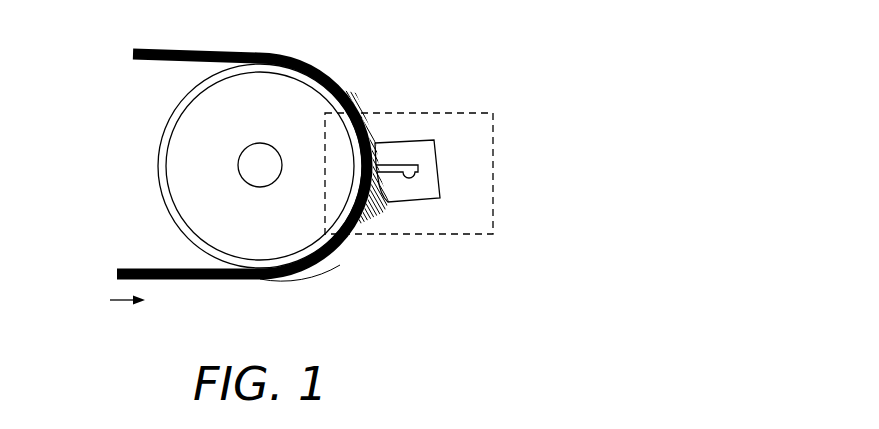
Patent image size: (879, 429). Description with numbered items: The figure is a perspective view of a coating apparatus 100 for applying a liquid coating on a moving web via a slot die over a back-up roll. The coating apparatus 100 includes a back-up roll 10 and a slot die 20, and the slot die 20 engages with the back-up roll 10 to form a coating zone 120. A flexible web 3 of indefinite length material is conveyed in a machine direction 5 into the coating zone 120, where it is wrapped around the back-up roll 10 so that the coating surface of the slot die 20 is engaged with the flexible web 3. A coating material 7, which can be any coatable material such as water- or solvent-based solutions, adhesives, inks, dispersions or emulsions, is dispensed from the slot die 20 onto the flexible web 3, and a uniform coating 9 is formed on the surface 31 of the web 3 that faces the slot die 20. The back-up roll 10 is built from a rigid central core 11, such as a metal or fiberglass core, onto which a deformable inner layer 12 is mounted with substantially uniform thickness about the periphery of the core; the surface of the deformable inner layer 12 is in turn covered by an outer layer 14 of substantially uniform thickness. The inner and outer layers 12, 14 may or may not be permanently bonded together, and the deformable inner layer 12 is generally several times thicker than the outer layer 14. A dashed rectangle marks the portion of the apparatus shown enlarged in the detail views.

The coating apparatus 100 is at (496, 53).
The back-up roll 10 is at (128, 95).
The rigid central core 11 is at (271, 174).
The deformable inner layer 12 is at (180, 147).
The outer layer 14 is at (158, 193).
The flexible web 3 is at (195, 280).
The surface of the web 31 is at (297, 273).
The machine direction 5 is at (127, 315).
The uniform coating 9 is at (358, 103).
The coating zone 120 is at (383, 223).
The slot die 20 is at (429, 218).
The coating material 7 is at (414, 179).